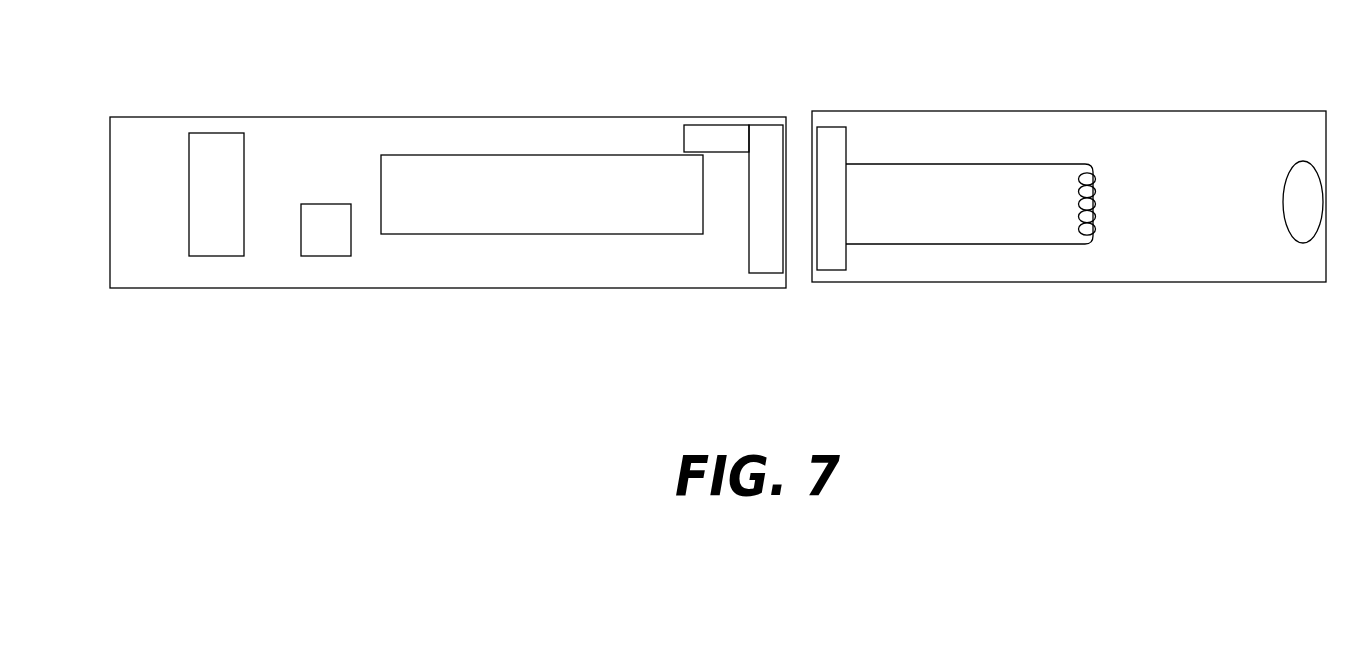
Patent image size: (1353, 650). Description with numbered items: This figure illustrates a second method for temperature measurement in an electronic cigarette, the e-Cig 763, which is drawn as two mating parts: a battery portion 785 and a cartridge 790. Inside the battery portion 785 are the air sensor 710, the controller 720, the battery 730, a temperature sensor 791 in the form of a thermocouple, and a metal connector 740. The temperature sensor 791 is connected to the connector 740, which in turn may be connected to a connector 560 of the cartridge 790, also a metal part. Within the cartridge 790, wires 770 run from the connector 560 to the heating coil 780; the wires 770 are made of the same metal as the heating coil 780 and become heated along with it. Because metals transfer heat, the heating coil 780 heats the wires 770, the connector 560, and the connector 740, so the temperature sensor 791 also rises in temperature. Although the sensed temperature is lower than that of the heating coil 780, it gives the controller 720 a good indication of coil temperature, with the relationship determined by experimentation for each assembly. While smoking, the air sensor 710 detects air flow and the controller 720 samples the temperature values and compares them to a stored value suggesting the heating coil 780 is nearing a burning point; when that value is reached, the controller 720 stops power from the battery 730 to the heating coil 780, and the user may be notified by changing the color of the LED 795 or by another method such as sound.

The e-Cig 763 is at (546, 371).
The battery portion 785 is at (348, 117).
The air sensor 710 is at (187, 245).
The controller 720 is at (329, 261).
The battery 730 is at (466, 238).
The temperature sensor 791 is at (713, 124).
The connector 740 is at (747, 253).
The cartridge 790 is at (1300, 110).
The connector 560 is at (849, 272).
The wires 770 is at (927, 242).
The heating coil 780 is at (1101, 187).
The LED 795 is at (1288, 229).